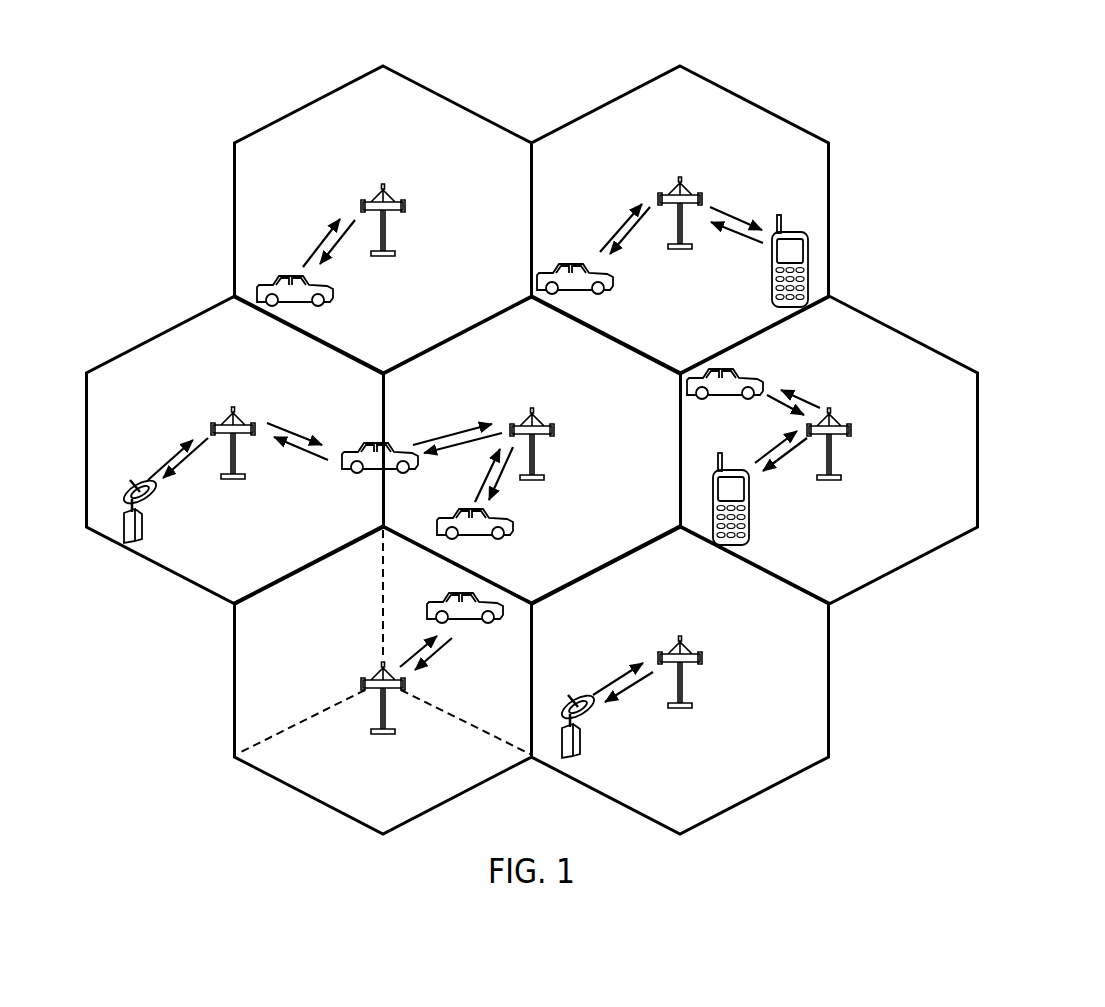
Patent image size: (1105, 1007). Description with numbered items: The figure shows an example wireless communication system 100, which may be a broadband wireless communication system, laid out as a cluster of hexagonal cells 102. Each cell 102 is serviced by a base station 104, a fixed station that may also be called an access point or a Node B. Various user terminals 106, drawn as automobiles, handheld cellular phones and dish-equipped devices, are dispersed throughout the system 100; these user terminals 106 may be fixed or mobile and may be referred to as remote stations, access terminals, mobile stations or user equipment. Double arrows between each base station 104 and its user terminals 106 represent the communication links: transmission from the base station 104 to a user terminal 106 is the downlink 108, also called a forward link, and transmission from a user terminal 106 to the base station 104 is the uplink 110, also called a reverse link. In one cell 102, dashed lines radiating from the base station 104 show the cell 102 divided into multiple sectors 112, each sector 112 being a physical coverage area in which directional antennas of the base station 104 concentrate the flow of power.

The wireless communication system 100 is at (963, 143).
The cell 102 is at (318, 100).
The base station 104 is at (383, 183).
The user terminal 106 is at (330, 298).
The downlink 108 is at (333, 257).
The uplink 110 is at (327, 243).
The sector 112 is at (437, 797).